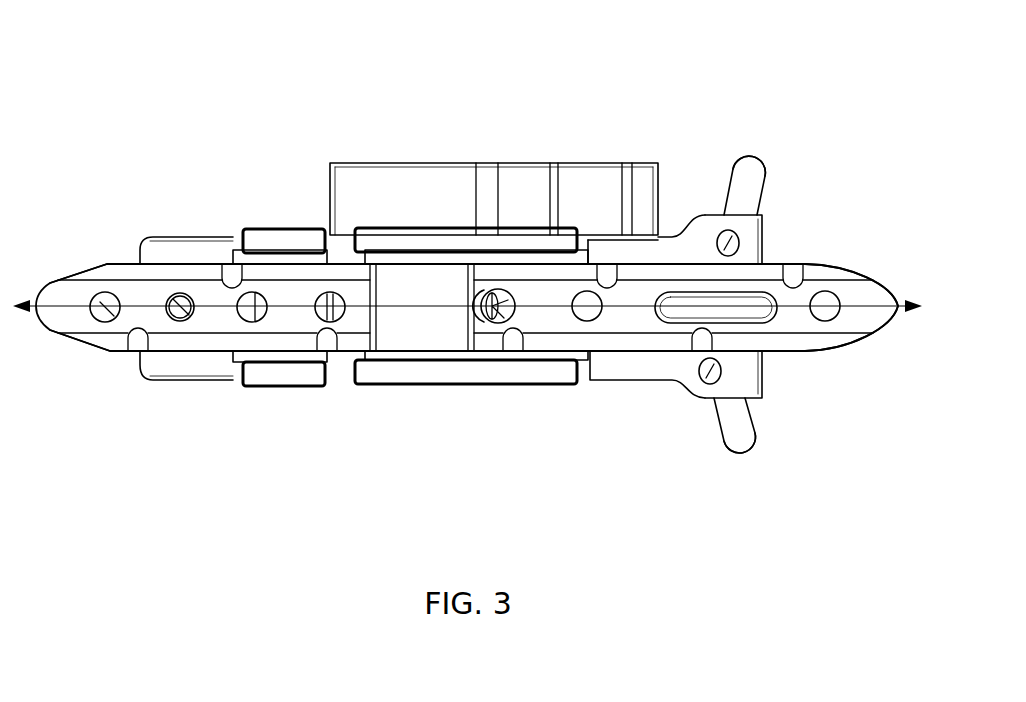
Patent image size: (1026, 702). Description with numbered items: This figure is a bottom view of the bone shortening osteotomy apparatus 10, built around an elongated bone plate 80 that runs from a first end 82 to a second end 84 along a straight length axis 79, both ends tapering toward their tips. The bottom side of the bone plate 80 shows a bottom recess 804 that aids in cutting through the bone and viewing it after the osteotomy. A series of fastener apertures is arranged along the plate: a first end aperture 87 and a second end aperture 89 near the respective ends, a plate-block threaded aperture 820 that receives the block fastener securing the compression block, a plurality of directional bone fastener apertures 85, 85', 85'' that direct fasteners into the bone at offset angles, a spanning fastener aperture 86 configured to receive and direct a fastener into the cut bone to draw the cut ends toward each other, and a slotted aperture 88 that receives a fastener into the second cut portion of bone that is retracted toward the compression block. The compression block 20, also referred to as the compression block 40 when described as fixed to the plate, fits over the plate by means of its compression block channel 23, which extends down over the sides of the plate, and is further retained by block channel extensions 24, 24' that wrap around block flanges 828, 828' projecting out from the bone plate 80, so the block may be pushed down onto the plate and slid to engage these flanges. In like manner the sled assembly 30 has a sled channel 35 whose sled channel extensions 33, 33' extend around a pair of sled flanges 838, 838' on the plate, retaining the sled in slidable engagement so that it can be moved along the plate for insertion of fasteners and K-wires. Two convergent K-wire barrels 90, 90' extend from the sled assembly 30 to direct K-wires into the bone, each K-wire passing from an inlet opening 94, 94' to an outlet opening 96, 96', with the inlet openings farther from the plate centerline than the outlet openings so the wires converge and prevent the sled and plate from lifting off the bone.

The bone shortening osteotomy apparatus 10 is at (190, 117).
The compression block 20 is at (219, 192).
The compression block channel 23 is at (163, 248).
The block channel extension 24 is at (284, 204).
The block channel extension 24' is at (292, 424).
The block flange 828 is at (274, 201).
The block flange 828' is at (280, 415).
The sled assembly 30 is at (687, 233).
The sled channel extension 33 is at (614, 183).
The sled channel extension 33' is at (593, 431).
The sled channel 35 is at (607, 243).
The compression block 40 is at (490, 185).
The length axis 79 is at (885, 312).
The bone plate 80 is at (845, 277).
The first end 82 is at (34, 303).
The second end 84 is at (905, 270).
The directional bone fastener aperture 85 is at (568, 380).
The directional bone fastener aperture 85' is at (342, 368).
The directional bone fastener aperture 85'' is at (243, 371).
The spanning fastener aperture 86 is at (488, 312).
The first end aperture 87 is at (123, 352).
The slotted aperture 88 is at (687, 313).
The second end aperture 89 is at (833, 312).
The bottom recess 804 is at (530, 272).
The plate-block threaded aperture 820 is at (180, 310).
The sled flange 838 is at (466, 176).
The sled flange 838' is at (471, 412).
The K-wire barrel 90 is at (736, 127).
The K-wire barrel 90' is at (775, 459).
The inlet opening 94 is at (756, 122).
The inlet opening 94' is at (732, 495).
The outlet opening 96 is at (768, 228).
The outlet opening 96' is at (688, 430).